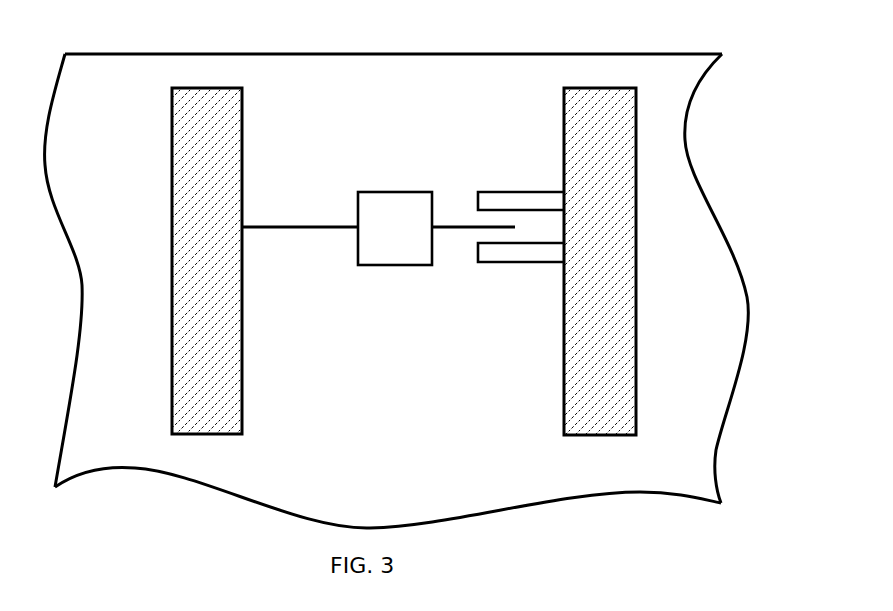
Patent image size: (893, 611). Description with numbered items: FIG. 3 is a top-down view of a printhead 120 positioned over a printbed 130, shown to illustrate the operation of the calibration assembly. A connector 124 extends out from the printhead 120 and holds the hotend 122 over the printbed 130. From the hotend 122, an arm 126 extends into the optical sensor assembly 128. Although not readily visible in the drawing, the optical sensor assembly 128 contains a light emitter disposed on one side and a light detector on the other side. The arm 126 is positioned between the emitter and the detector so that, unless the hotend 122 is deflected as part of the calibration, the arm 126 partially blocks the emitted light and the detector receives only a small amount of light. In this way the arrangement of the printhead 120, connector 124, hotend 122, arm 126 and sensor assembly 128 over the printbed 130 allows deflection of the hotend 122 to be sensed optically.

The printhead 120 is at (243, 131).
The hotend 122 is at (377, 192).
The connector 124 is at (253, 230).
The arm 126 is at (445, 228).
The optical sensor assembly 128 is at (531, 192).
The printbed 130 is at (685, 140).